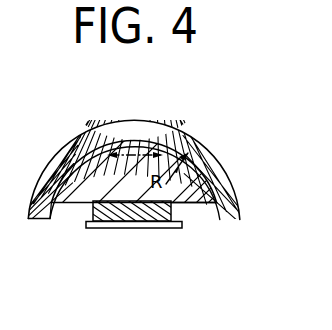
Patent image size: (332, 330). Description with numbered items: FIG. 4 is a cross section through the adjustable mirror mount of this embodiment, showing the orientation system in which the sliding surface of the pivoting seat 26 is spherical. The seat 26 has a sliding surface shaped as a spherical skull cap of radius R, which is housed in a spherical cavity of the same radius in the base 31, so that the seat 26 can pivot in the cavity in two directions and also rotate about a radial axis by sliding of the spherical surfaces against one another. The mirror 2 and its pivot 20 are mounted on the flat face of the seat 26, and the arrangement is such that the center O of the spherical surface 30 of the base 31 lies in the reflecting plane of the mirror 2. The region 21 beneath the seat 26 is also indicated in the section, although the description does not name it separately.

The mirror 2 is at (105, 229).
The pivot 20 is at (163, 224).
The space 21 is at (205, 204).
The pivoting seat 26 is at (63, 182).
The spherical surface 30 is at (57, 207).
The base 31 is at (73, 148).